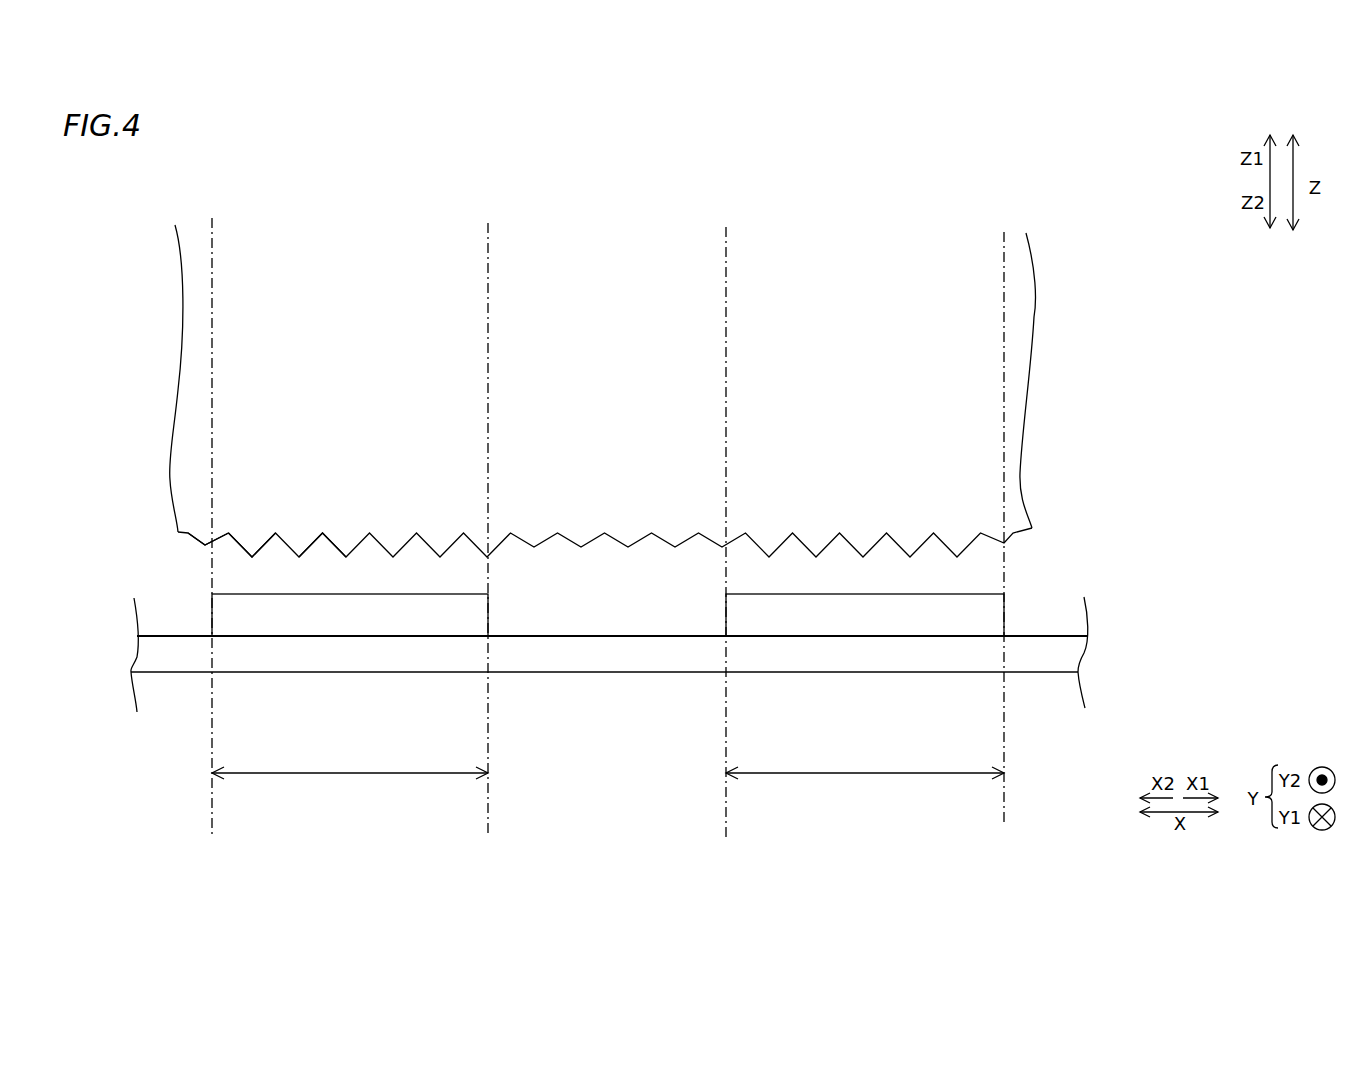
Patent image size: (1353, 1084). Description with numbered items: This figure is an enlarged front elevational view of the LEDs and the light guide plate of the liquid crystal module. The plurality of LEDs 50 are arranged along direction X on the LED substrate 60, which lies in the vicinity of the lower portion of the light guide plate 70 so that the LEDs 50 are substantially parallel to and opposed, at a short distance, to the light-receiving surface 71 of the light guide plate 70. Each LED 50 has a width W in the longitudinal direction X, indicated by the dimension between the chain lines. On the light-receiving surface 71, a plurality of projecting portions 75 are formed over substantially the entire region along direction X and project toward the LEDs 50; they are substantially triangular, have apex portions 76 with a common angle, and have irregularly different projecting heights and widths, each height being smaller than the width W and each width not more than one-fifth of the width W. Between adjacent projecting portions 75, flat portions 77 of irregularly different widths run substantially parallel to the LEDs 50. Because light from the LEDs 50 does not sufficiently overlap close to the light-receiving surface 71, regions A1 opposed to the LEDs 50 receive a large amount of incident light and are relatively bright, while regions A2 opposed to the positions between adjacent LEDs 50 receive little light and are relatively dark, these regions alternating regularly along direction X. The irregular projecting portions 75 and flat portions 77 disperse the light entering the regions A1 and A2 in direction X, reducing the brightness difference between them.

The light guide plate 70 is at (551, 421).
The light-receiving surface 71 is at (148, 529).
The projecting portions 75 is at (197, 539).
The apex portions 76 is at (255, 556).
The flat portions 77 is at (323, 534).
The LEDs 50 is at (212, 616).
The LED substrate 60 is at (1023, 672).
The regions having a large amount of incident light A1 is at (350, 227).
The regions having a small amount of incident light A2 is at (195, 230).
The width of each LED W is at (608, 790).